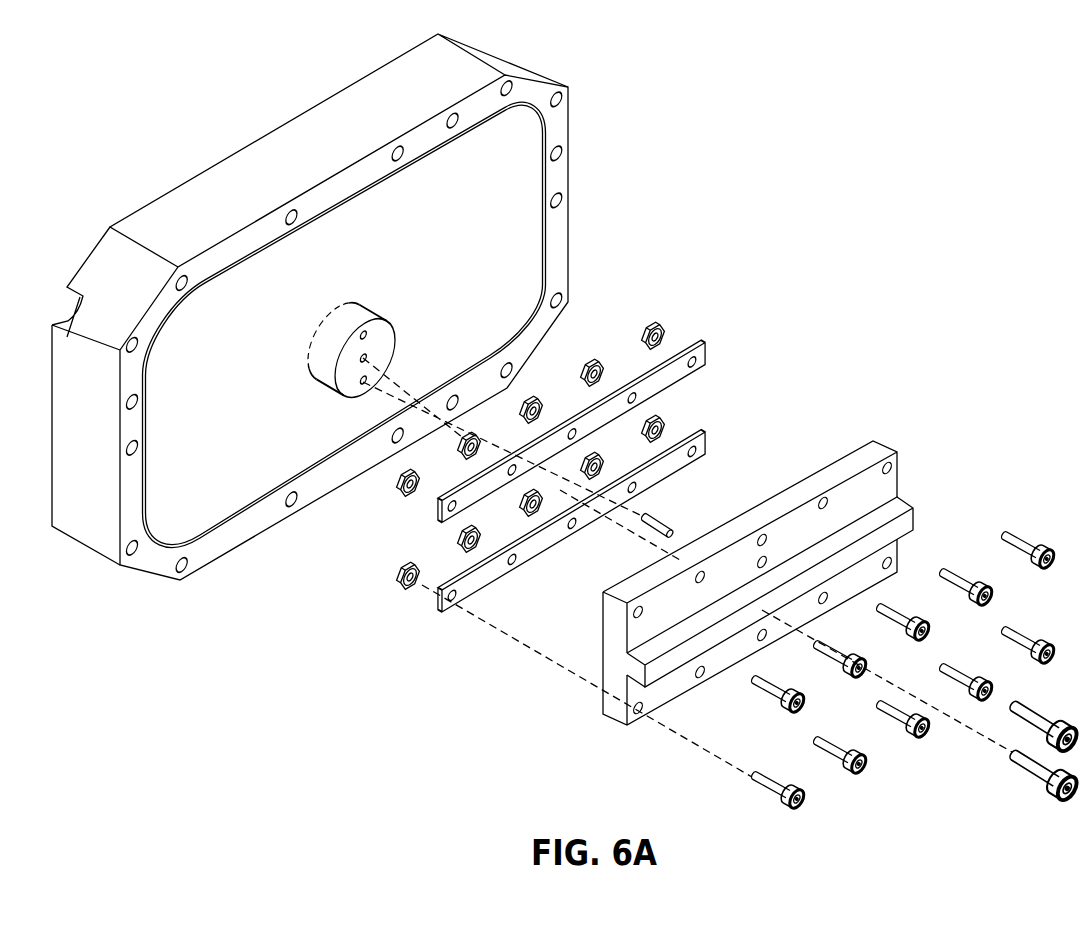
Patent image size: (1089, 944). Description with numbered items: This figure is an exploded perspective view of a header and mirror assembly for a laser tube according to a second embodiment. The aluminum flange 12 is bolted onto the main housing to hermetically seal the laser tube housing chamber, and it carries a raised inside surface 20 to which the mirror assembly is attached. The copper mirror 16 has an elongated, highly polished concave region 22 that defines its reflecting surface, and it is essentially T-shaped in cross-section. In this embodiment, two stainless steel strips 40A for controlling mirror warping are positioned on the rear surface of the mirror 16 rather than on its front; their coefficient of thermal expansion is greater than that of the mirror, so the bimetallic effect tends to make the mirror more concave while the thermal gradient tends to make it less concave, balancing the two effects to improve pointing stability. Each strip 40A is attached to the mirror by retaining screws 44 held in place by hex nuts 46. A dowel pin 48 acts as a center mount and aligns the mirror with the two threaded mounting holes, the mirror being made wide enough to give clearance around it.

The aluminum flange 12 is at (243, 160).
The raised inside surface 20 is at (343, 303).
The strips 40A is at (701, 346).
The hex nuts 46 is at (601, 363).
The dowel pin 48 is at (663, 521).
The copper mirror 16 is at (797, 558).
The concave region 22 is at (904, 524).
The retaining screws 44 is at (1026, 540).